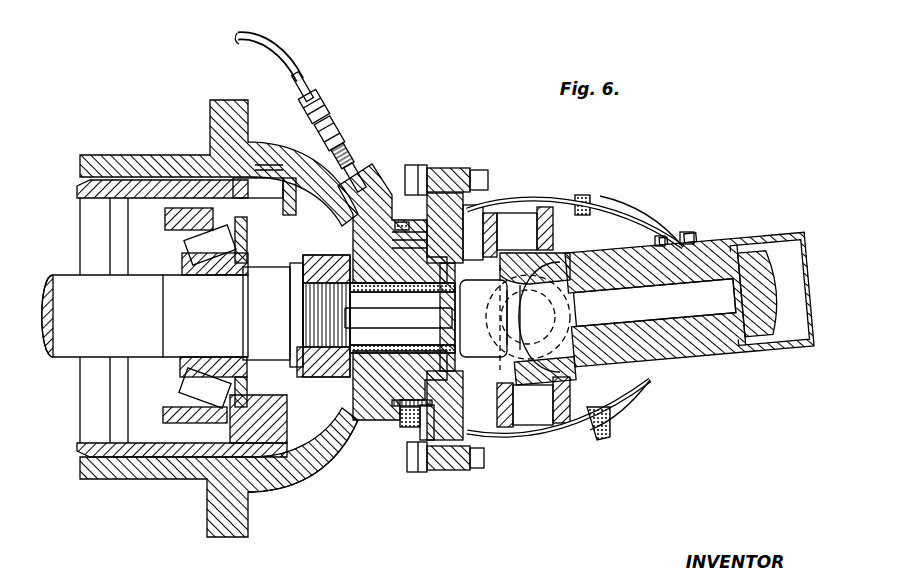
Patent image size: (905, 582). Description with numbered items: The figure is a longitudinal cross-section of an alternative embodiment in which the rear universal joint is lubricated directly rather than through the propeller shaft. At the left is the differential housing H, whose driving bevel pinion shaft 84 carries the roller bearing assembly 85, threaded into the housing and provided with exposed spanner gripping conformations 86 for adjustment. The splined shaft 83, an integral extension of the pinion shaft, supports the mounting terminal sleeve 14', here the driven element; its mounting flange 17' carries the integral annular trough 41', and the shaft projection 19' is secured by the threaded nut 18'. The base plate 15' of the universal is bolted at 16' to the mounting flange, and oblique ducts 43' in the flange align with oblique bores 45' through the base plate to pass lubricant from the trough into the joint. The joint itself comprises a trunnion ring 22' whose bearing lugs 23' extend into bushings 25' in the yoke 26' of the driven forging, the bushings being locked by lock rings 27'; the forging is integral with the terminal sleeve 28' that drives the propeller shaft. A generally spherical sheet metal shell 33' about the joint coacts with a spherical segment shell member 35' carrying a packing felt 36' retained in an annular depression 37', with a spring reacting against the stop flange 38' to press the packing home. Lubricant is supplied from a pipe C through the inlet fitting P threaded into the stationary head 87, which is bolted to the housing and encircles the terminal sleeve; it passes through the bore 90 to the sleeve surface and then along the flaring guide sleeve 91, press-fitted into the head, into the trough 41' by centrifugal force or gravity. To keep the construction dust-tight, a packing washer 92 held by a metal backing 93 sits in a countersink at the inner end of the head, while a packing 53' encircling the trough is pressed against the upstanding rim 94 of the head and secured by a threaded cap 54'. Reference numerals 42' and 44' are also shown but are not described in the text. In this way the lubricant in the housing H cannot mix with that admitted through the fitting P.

The differential housing H is at (118, 476).
The pipe C is at (284, 47).
The lubricant inlet fitting P is at (330, 118).
The spanner gripping conformations 86 is at (259, 186).
The roller bearing assembly 85 is at (205, 383).
The driving bevel pinion shaft 84 is at (292, 288).
The splined shaft 83 is at (302, 318).
The stationary head 87 is at (318, 480).
The metal backing 93 is at (352, 398).
The mounting terminal sleeve 14' is at (402, 318).
The packing washer 92 is at (398, 319).
The shaft wall 42' is at (402, 340).
The upstanding rim 94 is at (398, 214).
The bore 90 is at (390, 210).
The packing 53' is at (384, 442).
The threaded cap 54' is at (387, 485).
The annular trough 41' is at (408, 472).
The bolts 16' is at (460, 265).
The flaring guide sleeve 91 is at (437, 166).
The ducts 43' is at (445, 510).
The bores 45' is at (454, 492).
The shaft projection 19' is at (515, 317).
The mounting flange 17' is at (516, 199).
The base plate 15' is at (544, 203).
The lock rings 27' is at (517, 231).
The boot ring 44' is at (522, 435).
The bearing lugs 23' is at (599, 192).
The packing felt 36' is at (575, 197).
The yoke of driven forging 26' is at (672, 208).
The bushings 25' is at (580, 232).
The trunnion ring 22' is at (669, 220).
The stop flange 38' is at (707, 223).
The sheet metal shell 33' is at (558, 430).
The spherical segment shell member 35' is at (642, 405).
The annular depression 37' is at (620, 443).
The terminal sleeve 28' is at (659, 309).
The nut 18' is at (648, 303).